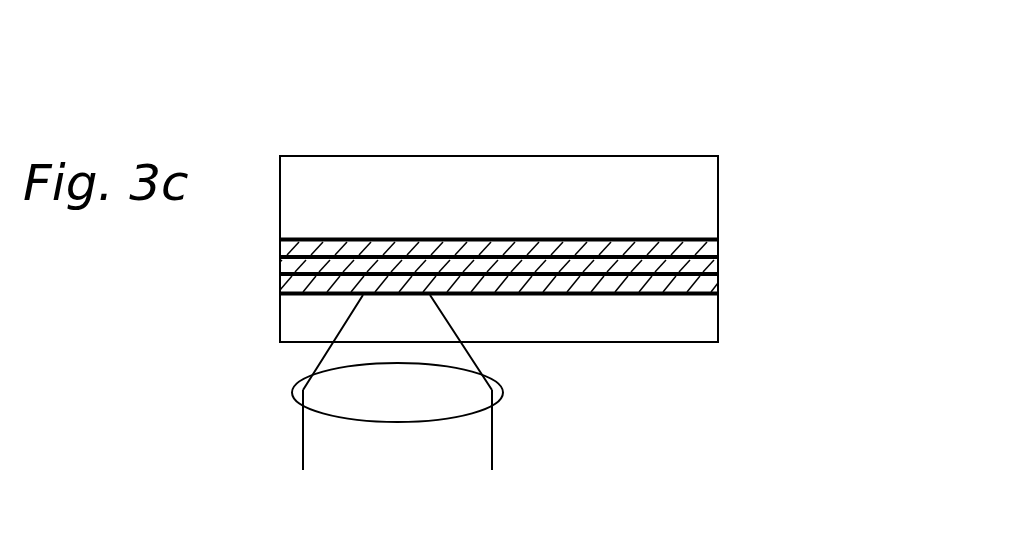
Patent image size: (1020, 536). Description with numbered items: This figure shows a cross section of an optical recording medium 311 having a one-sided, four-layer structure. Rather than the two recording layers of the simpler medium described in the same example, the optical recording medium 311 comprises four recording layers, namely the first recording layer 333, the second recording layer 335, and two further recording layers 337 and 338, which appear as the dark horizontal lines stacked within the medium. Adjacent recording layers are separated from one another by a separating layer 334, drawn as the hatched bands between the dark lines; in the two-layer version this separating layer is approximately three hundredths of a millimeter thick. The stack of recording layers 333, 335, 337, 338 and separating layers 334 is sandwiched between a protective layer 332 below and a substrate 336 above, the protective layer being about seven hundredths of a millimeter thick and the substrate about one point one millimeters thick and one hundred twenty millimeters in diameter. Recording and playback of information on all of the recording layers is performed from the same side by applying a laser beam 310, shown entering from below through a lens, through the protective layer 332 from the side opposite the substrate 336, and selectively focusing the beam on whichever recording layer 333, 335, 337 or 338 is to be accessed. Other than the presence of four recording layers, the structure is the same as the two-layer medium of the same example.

The optical recording medium 311 is at (578, 136).
The substrate 336 is at (698, 180).
The recording layer 338 is at (718, 239).
The recording layer 337 is at (718, 257).
The separating layer 334 is at (718, 248).
The second recording layer 335 is at (718, 274).
The first recording layer 333 is at (718, 296).
The protective layer 332 is at (672, 330).
The laser beam 310 is at (498, 434).